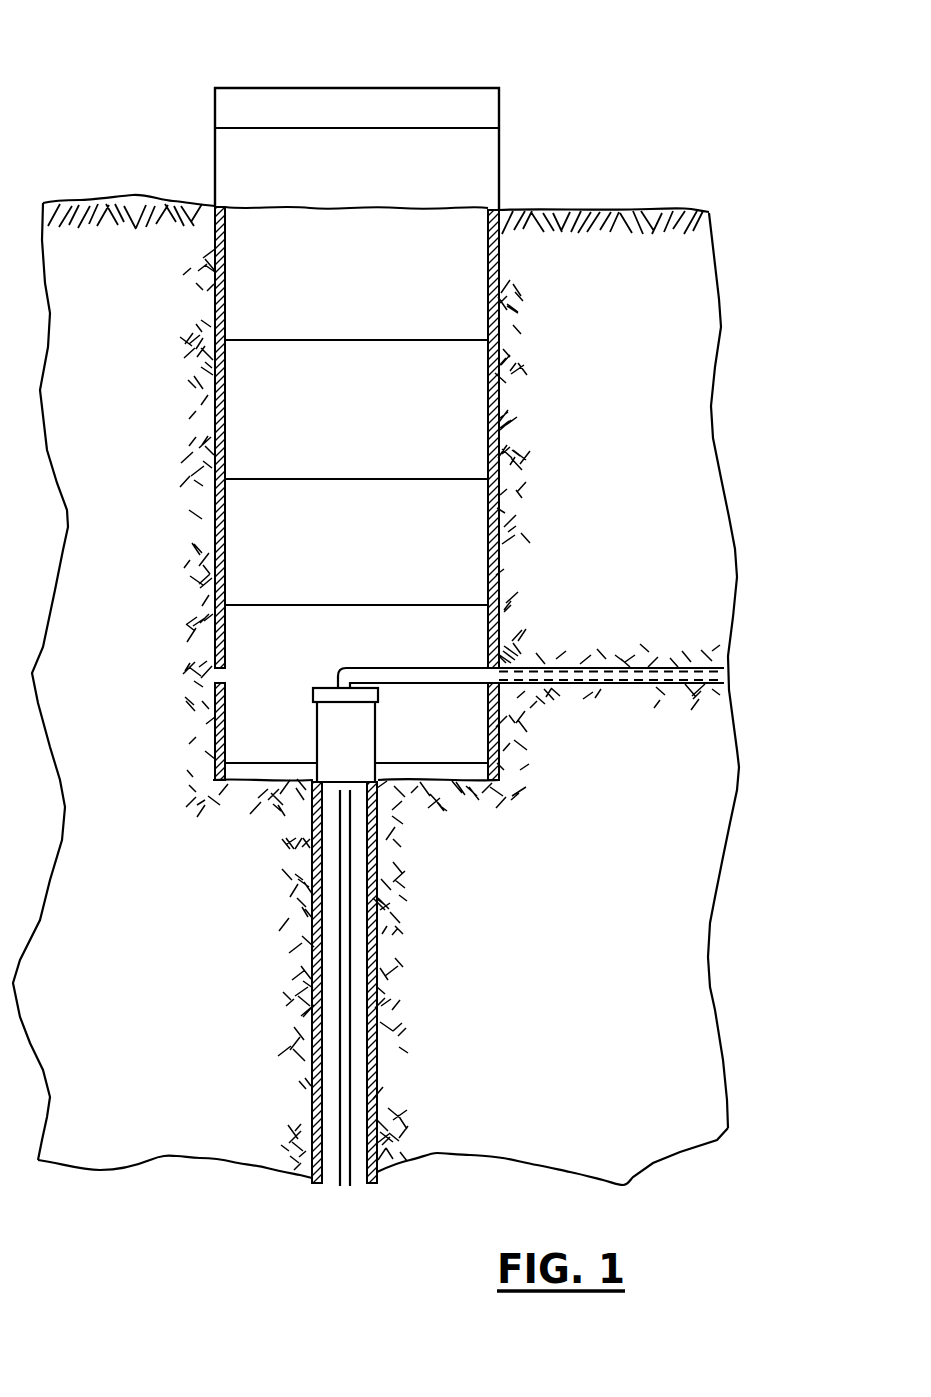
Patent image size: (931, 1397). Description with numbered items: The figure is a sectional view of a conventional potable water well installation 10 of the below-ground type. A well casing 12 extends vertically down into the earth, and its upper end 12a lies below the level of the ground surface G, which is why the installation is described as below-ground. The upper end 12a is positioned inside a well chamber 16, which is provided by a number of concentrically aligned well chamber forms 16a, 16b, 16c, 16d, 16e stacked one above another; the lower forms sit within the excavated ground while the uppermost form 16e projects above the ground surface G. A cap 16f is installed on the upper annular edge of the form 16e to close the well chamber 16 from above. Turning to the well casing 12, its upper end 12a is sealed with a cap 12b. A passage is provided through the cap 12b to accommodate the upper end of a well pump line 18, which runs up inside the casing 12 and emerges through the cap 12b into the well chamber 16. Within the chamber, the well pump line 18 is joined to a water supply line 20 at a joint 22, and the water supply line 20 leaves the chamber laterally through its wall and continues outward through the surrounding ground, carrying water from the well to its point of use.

The potable water well installation 10 is at (568, 158).
The well casing 12 is at (378, 926).
The upper end 12a is at (375, 740).
The cap 12b is at (337, 688).
The well chamber 16 is at (264, 258).
The well chamber form 16a is at (213, 300).
The well chamber form 16b is at (213, 420).
The well chamber form 16c is at (213, 548).
The well chamber form 16d is at (213, 667).
The well chamber form 16e is at (488, 152).
The cap 16f is at (403, 102).
The well pump line 18 is at (352, 1165).
The water supply line 20 is at (435, 672).
The joint 22 is at (348, 667).
The ground surface G is at (657, 211).